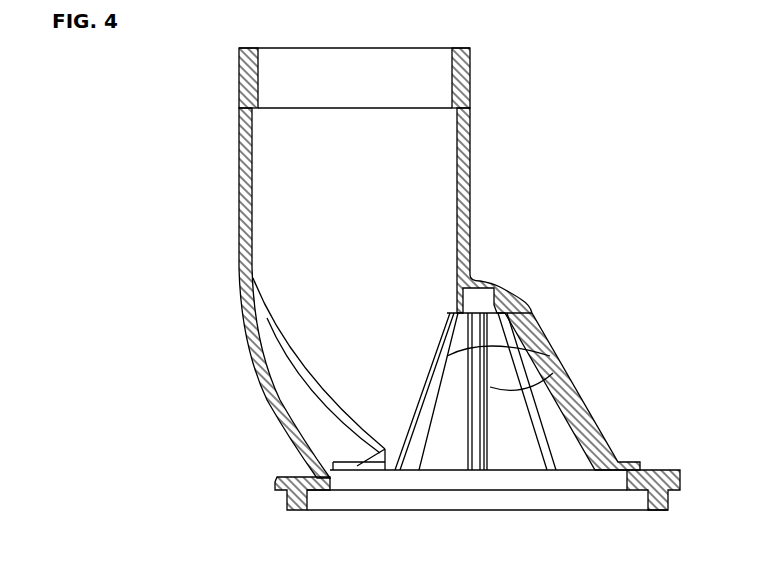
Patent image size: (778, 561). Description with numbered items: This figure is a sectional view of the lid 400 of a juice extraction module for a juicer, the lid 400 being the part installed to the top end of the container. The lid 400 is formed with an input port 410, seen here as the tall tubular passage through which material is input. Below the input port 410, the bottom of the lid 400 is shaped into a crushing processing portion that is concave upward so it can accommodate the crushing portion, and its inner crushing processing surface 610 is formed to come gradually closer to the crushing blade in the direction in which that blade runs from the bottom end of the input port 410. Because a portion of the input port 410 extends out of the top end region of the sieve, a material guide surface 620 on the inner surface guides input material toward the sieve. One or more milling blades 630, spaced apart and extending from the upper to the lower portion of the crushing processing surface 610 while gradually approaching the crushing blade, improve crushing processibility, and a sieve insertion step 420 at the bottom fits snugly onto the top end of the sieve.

The lid 400 is at (190, 132).
The input port 410 is at (238, 186).
The sieve insertion step 420 is at (330, 478).
The crushing processing surface 610 is at (542, 432).
The material guide surface 620 is at (285, 410).
The milling blades 630 is at (553, 373).